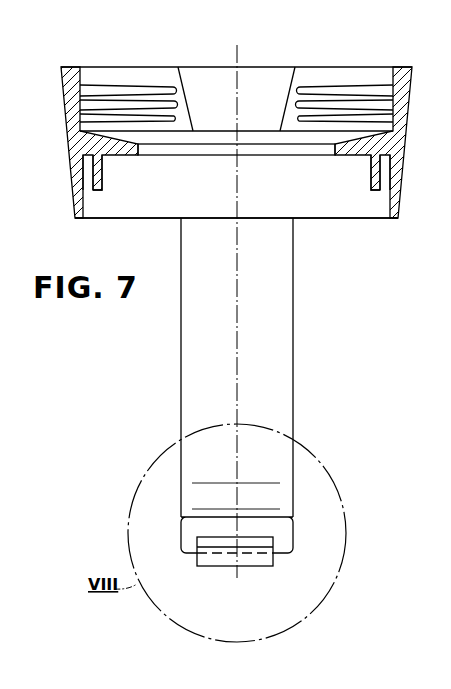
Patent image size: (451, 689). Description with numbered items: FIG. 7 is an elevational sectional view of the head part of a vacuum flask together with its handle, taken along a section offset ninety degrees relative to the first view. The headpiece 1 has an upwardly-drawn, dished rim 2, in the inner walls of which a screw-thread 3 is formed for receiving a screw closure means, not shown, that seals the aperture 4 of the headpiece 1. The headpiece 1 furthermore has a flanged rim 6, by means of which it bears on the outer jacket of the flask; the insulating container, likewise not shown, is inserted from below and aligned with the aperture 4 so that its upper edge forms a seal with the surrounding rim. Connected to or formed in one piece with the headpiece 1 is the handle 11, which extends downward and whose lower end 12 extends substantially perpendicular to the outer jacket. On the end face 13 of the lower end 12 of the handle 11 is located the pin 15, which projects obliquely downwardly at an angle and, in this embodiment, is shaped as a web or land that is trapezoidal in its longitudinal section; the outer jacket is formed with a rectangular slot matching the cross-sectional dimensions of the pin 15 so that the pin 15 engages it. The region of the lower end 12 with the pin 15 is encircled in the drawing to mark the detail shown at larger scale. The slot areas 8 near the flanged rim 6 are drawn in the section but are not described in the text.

The headpiece 1 is at (344, 61).
The dished rim 2 is at (68, 85).
The screw-thread 3 is at (133, 87).
The aperture 4 is at (218, 156).
The flanged rim 6 is at (73, 179).
The annular groove 8 is at (118, 154).
The handle 11 is at (190, 352).
The lower end 12 is at (295, 523).
The end face 13 is at (259, 525).
The pin 15 is at (208, 549).